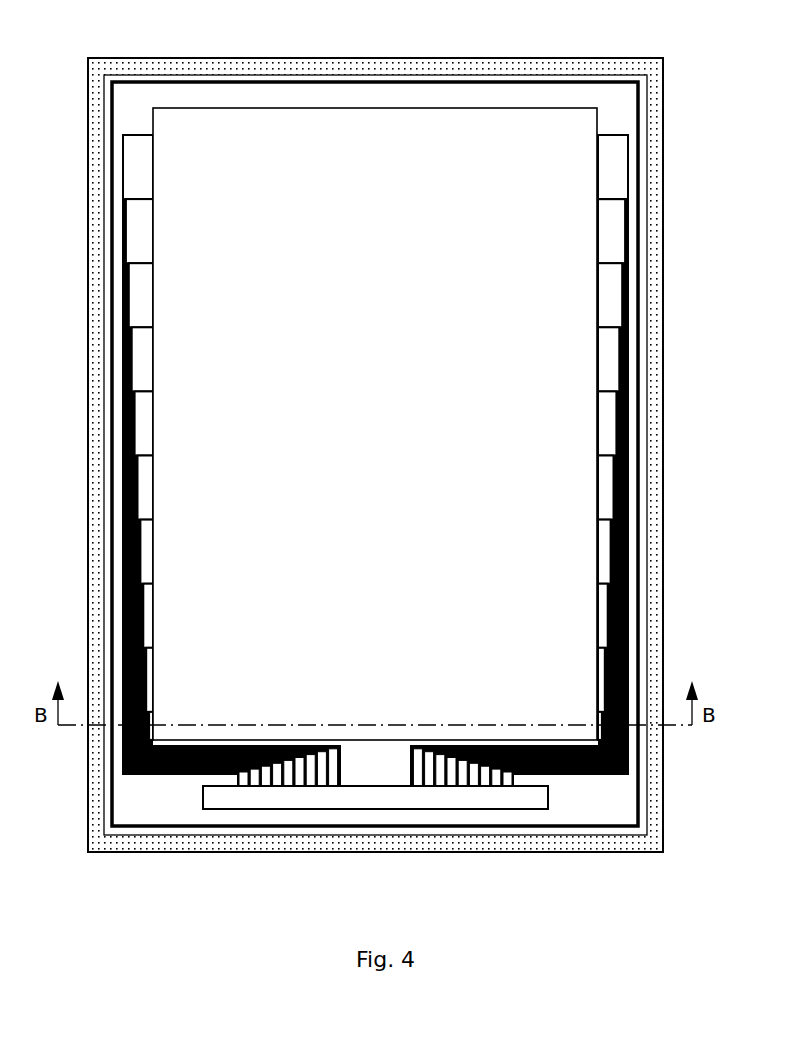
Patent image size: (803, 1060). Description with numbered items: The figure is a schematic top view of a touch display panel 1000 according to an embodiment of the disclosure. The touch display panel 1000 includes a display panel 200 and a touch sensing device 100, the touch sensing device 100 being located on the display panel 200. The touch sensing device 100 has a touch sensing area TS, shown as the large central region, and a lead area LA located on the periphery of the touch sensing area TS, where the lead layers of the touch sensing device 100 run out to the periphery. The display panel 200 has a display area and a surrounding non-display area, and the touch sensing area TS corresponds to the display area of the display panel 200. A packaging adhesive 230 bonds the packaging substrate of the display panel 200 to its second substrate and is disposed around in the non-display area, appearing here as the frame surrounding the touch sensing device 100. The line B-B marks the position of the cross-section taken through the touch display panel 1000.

The touch sensing area TS is at (467, 152).
The lead area LA is at (612, 181).
The packaging adhesive 230 is at (655, 293).
The touch sensing device 100 is at (638, 775).
The display panel 200 is at (665, 820).
The touch display panel 1000 is at (601, 905).